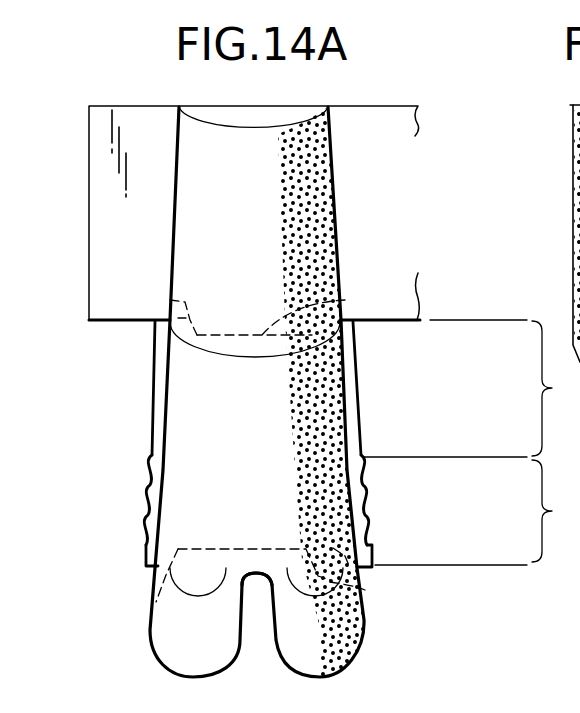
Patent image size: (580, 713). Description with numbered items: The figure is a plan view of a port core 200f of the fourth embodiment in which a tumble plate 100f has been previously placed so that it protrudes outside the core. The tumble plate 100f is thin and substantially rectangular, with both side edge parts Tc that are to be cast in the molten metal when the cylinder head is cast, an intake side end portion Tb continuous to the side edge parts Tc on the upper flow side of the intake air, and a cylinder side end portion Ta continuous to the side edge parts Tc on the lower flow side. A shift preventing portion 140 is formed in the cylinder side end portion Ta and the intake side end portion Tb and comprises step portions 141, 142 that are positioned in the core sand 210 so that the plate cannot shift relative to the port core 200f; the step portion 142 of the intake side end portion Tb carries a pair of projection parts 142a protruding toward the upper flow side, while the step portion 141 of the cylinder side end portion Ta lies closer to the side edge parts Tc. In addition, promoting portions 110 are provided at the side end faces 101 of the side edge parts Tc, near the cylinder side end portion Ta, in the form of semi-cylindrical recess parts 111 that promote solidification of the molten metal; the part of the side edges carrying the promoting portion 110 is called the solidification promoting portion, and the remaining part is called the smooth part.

The port core 200f is at (82, 106).
The core sand 210 is at (335, 212).
The tumble plate 100f is at (151, 399).
The promoting portion 110 is at (73, 496).
The recess part 111 is at (148, 509).
The side end face 101 is at (144, 560).
The shift preventing portion 140 is at (434, 373).
The step portion 141 is at (372, 557).
The step portion 142 is at (347, 340).
The projection part 142a is at (170, 300).
The cylinder side end portion Ta is at (365, 590).
The intake side end portion Tb is at (345, 302).
The side edge part Tc is at (151, 414).